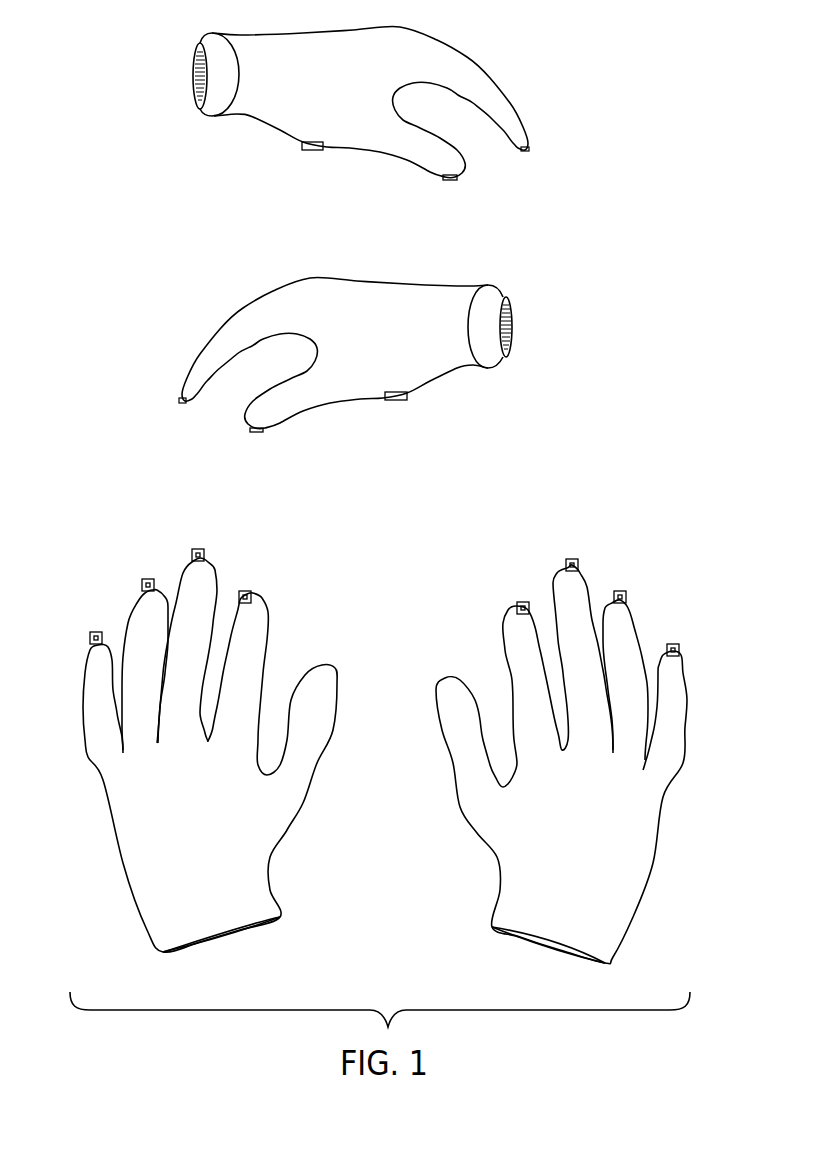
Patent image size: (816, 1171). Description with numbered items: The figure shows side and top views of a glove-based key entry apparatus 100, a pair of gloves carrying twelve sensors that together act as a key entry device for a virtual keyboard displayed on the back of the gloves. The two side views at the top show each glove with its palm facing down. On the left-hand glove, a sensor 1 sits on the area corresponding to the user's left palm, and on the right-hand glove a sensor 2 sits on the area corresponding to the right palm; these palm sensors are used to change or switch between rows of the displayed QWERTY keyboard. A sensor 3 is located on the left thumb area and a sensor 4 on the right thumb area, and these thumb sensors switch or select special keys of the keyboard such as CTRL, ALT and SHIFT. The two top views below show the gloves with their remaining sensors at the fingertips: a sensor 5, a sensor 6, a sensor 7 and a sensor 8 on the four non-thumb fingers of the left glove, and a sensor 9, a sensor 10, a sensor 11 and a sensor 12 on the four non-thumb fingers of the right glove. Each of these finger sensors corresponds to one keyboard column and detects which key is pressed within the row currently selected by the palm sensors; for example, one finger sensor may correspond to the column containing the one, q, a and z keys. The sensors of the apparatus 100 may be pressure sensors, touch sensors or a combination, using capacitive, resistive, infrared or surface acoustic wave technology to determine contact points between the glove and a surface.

The sensor 1 is at (312, 150).
The sensor 2 is at (396, 400).
The sensor 3 is at (450, 180).
The sensor 4 is at (257, 432).
The sensor 5 is at (96, 631).
The sensor 6 is at (148, 578).
The sensor 7 is at (198, 548).
The sensor 8 is at (245, 590).
The sensor 9 is at (523, 601).
The sensor 10 is at (572, 558).
The sensor 11 is at (620, 590).
The sensor 12 is at (673, 643).
The glove-based key entry apparatus 100 is at (297, 568).